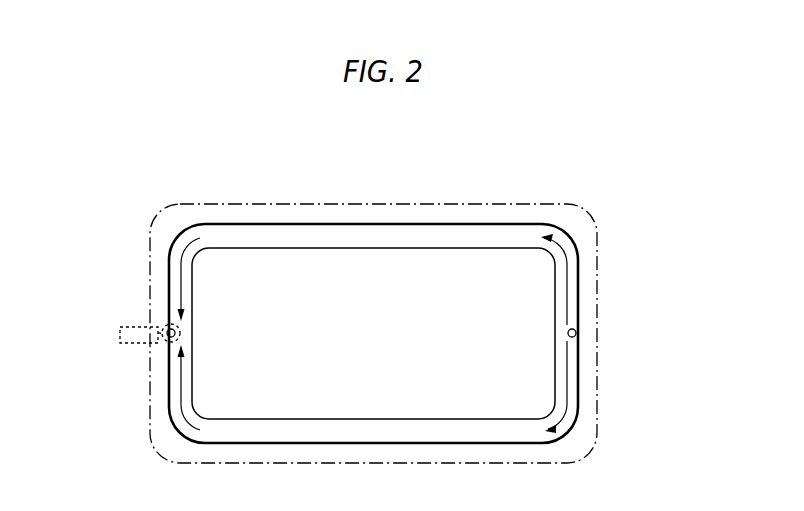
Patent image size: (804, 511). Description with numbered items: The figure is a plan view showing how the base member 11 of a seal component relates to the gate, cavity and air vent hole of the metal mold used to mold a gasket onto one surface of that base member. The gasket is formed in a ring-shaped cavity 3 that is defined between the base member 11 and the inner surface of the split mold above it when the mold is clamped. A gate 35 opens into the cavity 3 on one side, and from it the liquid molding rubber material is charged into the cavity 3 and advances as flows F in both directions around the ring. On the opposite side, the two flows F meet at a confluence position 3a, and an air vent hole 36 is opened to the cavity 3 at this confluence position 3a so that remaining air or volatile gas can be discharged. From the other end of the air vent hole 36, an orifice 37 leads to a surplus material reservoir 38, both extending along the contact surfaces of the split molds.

The cavity 3 is at (322, 234).
The confluence position 3a is at (183, 333).
The base member 11 is at (427, 209).
The gate 35 is at (577, 333).
The air vent hole 36 is at (165, 327).
The orifice 37 is at (162, 341).
The surplus material reservoir 38 is at (125, 342).
The flow F is at (183, 283).